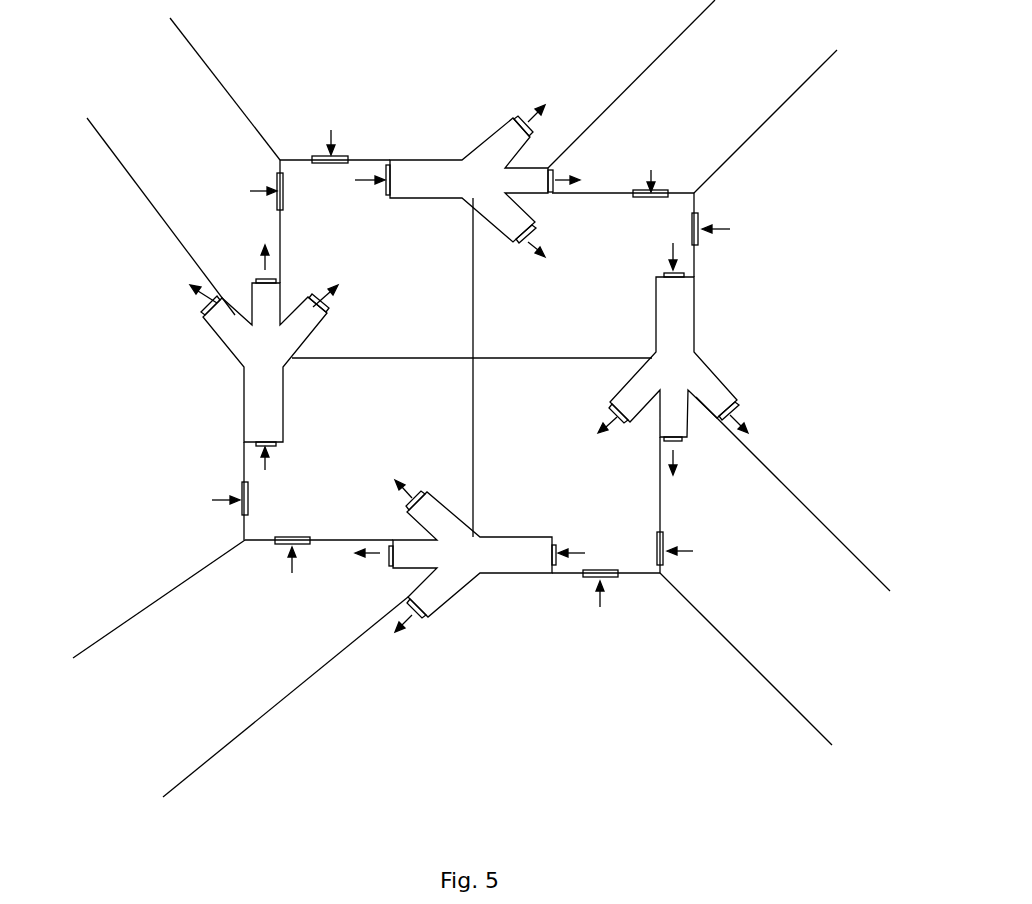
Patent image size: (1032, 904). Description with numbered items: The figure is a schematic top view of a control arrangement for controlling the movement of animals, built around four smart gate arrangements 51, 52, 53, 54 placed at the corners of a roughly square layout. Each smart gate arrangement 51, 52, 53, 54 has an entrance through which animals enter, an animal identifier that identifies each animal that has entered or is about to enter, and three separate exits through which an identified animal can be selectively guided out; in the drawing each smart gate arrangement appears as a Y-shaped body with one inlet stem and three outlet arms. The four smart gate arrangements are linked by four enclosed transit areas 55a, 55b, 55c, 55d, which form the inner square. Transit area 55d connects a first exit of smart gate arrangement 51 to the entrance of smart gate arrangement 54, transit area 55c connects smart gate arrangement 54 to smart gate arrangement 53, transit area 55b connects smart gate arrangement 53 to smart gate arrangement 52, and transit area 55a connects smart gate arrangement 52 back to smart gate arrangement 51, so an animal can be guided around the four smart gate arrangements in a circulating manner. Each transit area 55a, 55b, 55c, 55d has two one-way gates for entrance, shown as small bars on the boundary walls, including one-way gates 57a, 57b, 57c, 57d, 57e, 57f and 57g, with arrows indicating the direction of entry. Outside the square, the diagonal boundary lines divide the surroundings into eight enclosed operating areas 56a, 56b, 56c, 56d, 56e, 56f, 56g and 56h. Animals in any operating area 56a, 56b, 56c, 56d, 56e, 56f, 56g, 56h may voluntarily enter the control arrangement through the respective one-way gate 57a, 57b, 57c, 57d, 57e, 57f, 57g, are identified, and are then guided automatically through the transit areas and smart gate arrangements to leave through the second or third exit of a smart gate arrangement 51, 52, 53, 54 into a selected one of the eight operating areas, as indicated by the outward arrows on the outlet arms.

The smart gate arrangement 51 is at (244, 395).
The smart gate arrangement 52 is at (513, 573).
The smart gate arrangement 53 is at (695, 325).
The smart gate arrangement 54 is at (440, 160).
The transit area 55a is at (382, 391).
The transit area 55b is at (511, 447).
The transit area 55c is at (562, 320).
The transit area 55d is at (433, 278).
The operating area 56a is at (161, 300).
The operating area 56b is at (356, 697).
The operating area 56c is at (793, 457).
The operating area 56d is at (554, 84).
The operating area 56e is at (159, 599).
The operating area 56f is at (746, 657).
The operating area 56g is at (765, 121).
The operating area 56h is at (216, 89).
The one-way gate 57a is at (240, 515).
The one-way gate 57b is at (283, 188).
The one-way gate 57c is at (698, 212).
The one-way gate 57d is at (348, 157).
The one-way gate 57e is at (310, 542).
The one-way gate 57f is at (663, 538).
The one-way gate 57g is at (668, 193).